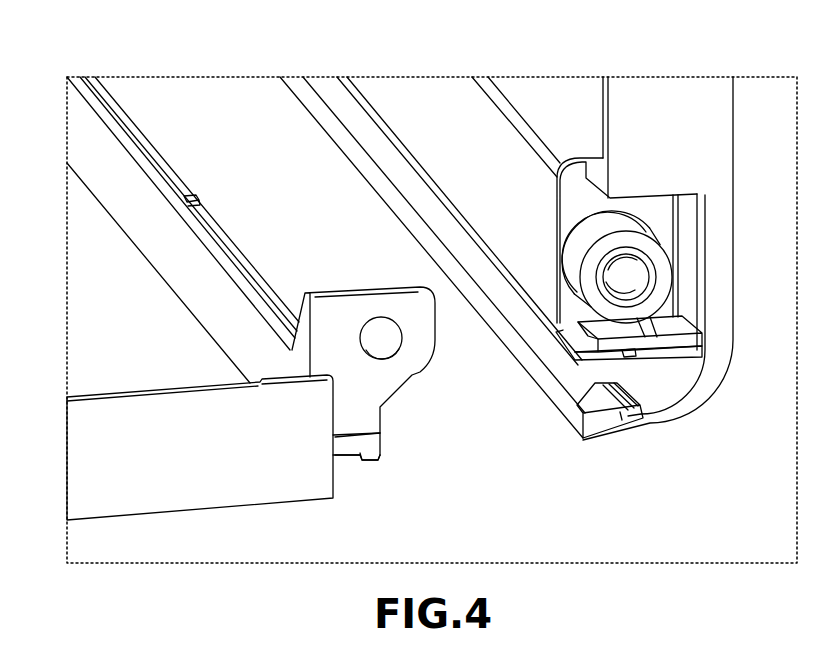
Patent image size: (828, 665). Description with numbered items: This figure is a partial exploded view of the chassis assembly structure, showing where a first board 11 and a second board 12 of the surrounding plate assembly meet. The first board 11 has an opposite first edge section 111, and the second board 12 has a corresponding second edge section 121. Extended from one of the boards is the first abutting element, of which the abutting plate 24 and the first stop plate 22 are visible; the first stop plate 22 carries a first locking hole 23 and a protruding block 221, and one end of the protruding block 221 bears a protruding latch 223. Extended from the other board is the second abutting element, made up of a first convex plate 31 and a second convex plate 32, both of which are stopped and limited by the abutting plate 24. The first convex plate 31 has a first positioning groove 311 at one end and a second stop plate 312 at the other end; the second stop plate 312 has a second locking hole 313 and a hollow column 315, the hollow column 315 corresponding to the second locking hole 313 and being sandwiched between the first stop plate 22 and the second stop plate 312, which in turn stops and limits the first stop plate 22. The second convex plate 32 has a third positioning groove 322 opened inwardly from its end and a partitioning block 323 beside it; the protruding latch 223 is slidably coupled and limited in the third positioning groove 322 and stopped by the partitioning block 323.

The first board 11 is at (108, 312).
The first edge section 111 is at (143, 260).
The abutting plate 24 is at (143, 202).
The first stop plate 22 is at (353, 307).
The first locking hole 23 is at (381, 332).
The protruding block 221 is at (372, 440).
The protruding latch 223 is at (372, 457).
The first convex plate 31 is at (393, 103).
The second convex plate 32 is at (571, 378).
The partitioning block 323 is at (572, 405).
The third positioning groove 322 is at (628, 416).
The second board 12 is at (557, 104).
The second edge section 121 is at (516, 104).
The second stop plate 312 is at (570, 200).
The hollow column 315 is at (635, 228).
The first positioning groove 311 is at (640, 374).
The second locking hole 313 is at (648, 281).